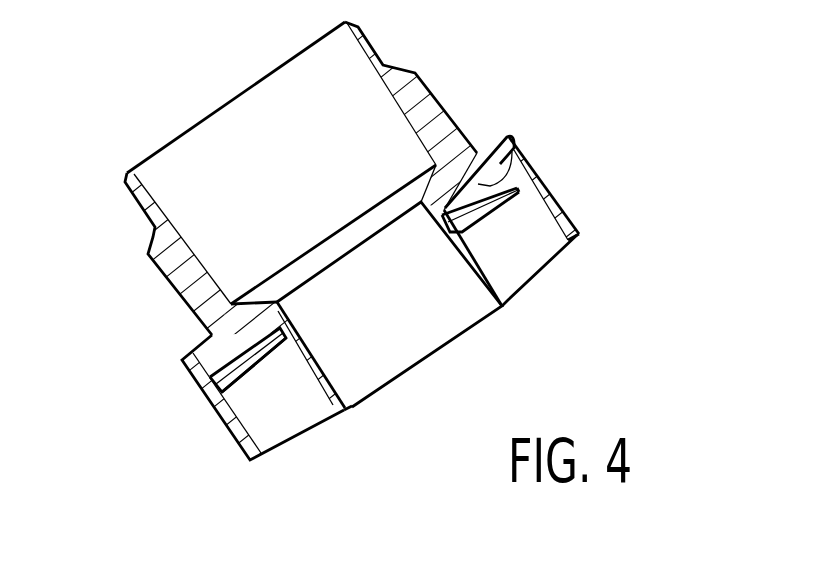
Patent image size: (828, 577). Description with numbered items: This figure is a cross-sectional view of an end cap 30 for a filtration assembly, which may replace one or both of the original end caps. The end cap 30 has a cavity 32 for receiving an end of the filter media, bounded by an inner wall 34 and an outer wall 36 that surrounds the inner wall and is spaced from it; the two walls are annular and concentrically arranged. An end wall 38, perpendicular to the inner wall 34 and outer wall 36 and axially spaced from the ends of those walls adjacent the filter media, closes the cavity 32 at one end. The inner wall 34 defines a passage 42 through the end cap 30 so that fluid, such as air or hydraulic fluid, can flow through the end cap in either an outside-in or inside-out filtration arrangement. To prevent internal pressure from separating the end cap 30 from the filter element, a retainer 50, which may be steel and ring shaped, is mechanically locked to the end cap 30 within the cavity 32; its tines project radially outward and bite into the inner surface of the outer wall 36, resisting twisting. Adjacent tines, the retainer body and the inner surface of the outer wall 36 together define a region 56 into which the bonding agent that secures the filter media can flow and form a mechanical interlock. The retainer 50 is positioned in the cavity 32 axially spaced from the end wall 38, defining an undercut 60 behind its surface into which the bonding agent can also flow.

The end cap 30 is at (476, 110).
The cavity 32 is at (523, 252).
The inner wall 34 is at (332, 414).
The outer wall 36 is at (580, 228).
The end wall 38 is at (507, 168).
The passage 42 is at (238, 155).
The retainer 50 is at (248, 388).
The region 56 is at (535, 166).
The undercut 60 is at (238, 366).